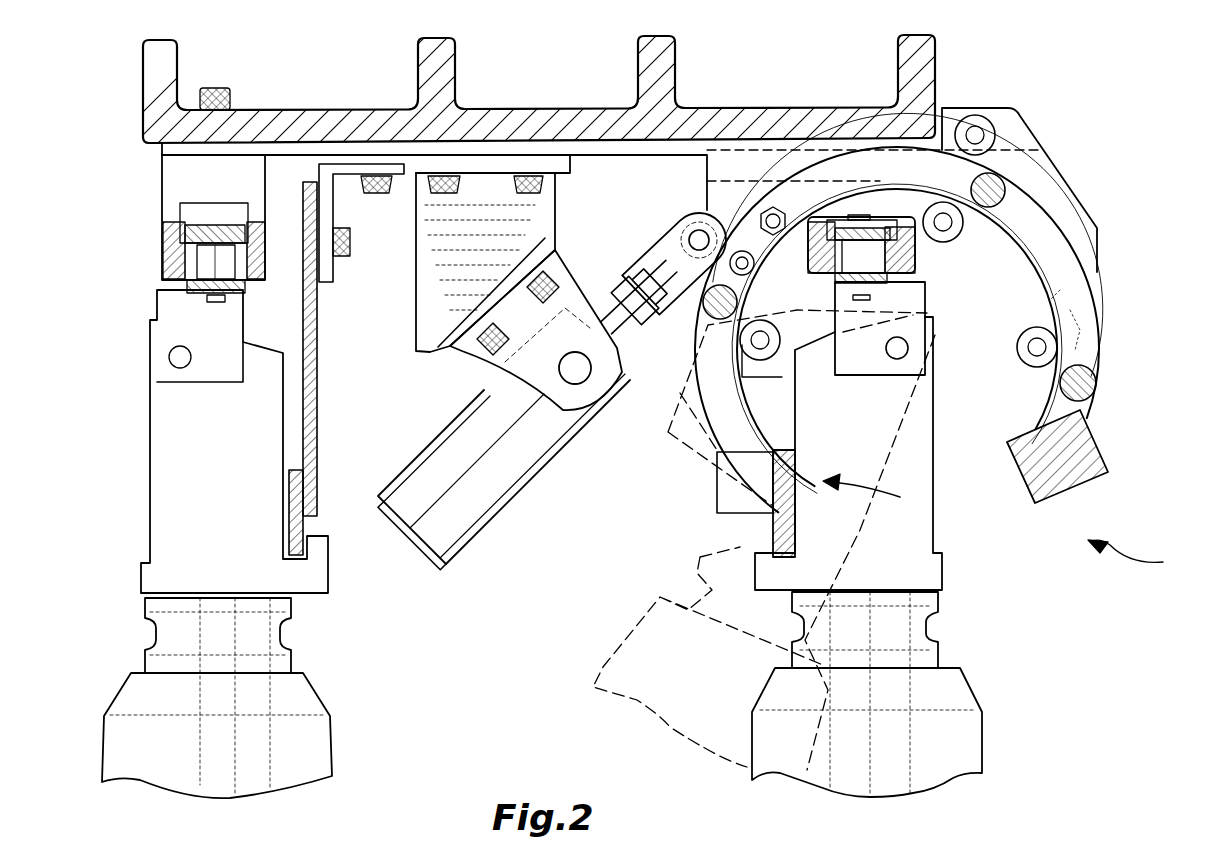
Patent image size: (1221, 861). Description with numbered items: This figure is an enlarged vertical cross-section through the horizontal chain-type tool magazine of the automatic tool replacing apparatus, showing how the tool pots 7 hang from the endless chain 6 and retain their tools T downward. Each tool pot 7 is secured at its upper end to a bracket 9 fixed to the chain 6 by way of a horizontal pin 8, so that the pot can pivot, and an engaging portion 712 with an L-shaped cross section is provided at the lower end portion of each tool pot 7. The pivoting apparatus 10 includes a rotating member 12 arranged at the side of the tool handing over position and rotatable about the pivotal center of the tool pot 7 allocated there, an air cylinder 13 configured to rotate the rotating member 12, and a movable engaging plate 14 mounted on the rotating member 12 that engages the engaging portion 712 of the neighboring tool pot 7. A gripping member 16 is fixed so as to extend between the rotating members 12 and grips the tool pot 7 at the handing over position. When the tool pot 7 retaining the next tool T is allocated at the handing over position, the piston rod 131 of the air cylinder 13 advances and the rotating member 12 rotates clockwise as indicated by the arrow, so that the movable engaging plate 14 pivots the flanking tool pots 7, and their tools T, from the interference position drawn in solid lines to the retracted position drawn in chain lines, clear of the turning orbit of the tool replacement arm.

The endless chain 6 is at (178, 228).
The tool pot 7 is at (155, 490).
The horizontal pin 8 is at (897, 362).
The bracket 9 is at (845, 378).
The pivoting apparatus 10 is at (1012, 526).
The rotating member 12 is at (1085, 325).
The air cylinder 13 is at (470, 512).
The movable engaging plate 14 is at (797, 512).
The gripping member 16 is at (1055, 495).
The piston rod 131 is at (607, 312).
The engaging portion 712 is at (700, 528).
The tool T is at (318, 765).